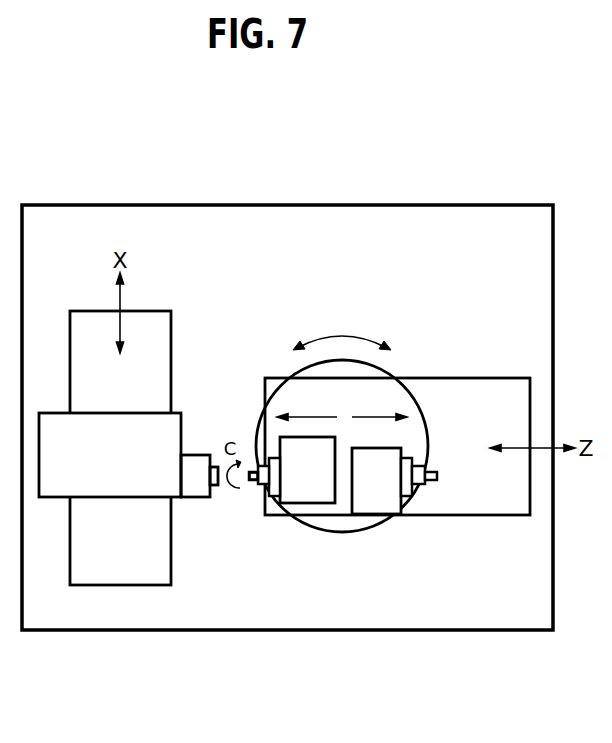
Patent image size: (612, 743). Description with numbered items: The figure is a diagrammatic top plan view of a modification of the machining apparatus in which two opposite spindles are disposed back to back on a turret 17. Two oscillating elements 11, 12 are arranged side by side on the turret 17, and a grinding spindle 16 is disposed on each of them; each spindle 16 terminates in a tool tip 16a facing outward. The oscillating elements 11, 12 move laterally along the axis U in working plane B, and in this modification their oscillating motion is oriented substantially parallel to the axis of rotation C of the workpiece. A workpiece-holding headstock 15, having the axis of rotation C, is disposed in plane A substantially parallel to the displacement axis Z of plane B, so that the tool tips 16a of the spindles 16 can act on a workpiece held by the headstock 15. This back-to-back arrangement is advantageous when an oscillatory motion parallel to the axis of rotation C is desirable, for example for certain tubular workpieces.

The oscillating element 11 is at (303, 479).
The oscillating element 12 is at (371, 493).
The workpiece-holding headstock 15 is at (196, 481).
The grinding spindle 16 is at (263, 482).
The tool tip 16a is at (253, 472).
The rotary tool turret 17 is at (330, 396).